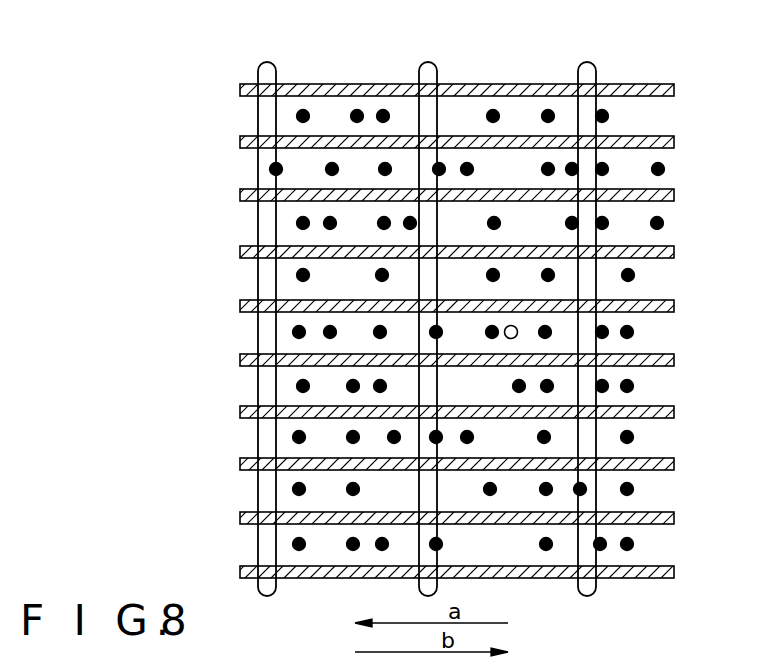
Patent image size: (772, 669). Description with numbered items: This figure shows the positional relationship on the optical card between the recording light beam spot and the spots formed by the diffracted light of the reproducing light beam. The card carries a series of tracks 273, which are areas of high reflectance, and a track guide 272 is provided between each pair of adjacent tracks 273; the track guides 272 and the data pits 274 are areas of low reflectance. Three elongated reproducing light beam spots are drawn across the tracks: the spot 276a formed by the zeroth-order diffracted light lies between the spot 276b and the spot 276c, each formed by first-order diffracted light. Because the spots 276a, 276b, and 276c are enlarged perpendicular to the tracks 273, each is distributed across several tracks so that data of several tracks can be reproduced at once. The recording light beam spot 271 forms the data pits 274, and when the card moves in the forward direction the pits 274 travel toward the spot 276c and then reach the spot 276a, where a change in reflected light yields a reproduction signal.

The recording light beam spot 271 is at (516, 338).
The track guides 272 is at (663, 86).
The tracks 273 is at (654, 121).
The data pit 274 is at (493, 110).
The spot formed by the 0th-order diffracted light of the reproducing light beam 276a is at (422, 62).
The spot formed by the first-order diffracted light of the reproducing light beam 276b is at (582, 64).
The spot formed by the first-order diffracted light of the reproducing light beam 276c is at (263, 62).